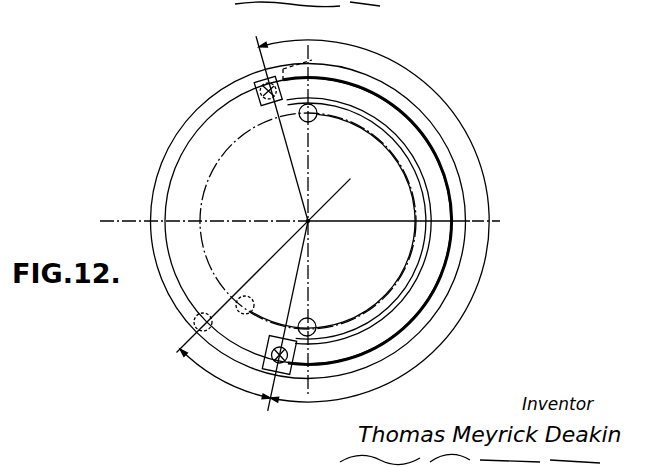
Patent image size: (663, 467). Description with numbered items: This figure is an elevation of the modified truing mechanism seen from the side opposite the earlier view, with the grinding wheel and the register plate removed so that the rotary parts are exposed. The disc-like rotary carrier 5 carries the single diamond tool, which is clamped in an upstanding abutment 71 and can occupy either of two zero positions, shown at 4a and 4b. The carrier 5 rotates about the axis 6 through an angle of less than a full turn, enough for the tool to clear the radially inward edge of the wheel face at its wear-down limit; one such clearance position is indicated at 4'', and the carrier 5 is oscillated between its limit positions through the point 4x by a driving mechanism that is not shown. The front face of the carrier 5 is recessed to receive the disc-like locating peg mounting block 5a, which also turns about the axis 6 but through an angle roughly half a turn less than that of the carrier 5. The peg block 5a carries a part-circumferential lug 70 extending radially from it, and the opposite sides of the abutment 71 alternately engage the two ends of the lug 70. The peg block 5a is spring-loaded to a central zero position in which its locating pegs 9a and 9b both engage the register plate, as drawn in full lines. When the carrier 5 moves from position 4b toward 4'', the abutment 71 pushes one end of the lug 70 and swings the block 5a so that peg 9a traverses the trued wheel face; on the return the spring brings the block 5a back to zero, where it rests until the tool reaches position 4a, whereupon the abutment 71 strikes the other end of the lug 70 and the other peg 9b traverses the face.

The part-circumferential lug 70 is at (182, 149).
The rotary carrier 5 is at (452, 284).
The locating peg mounting block 5a is at (412, 168).
The point 4x is at (488, 220).
The axis 6 is at (309, 223).
The locating peg 9b is at (314, 120).
The locating peg 9a is at (313, 320).
The zero position of diamond tool 4a is at (267, 113).
The zero position of diamond tool 4b is at (277, 334).
The upstanding abutment 71 is at (309, 63).
The clearance position 4'' is at (177, 325).